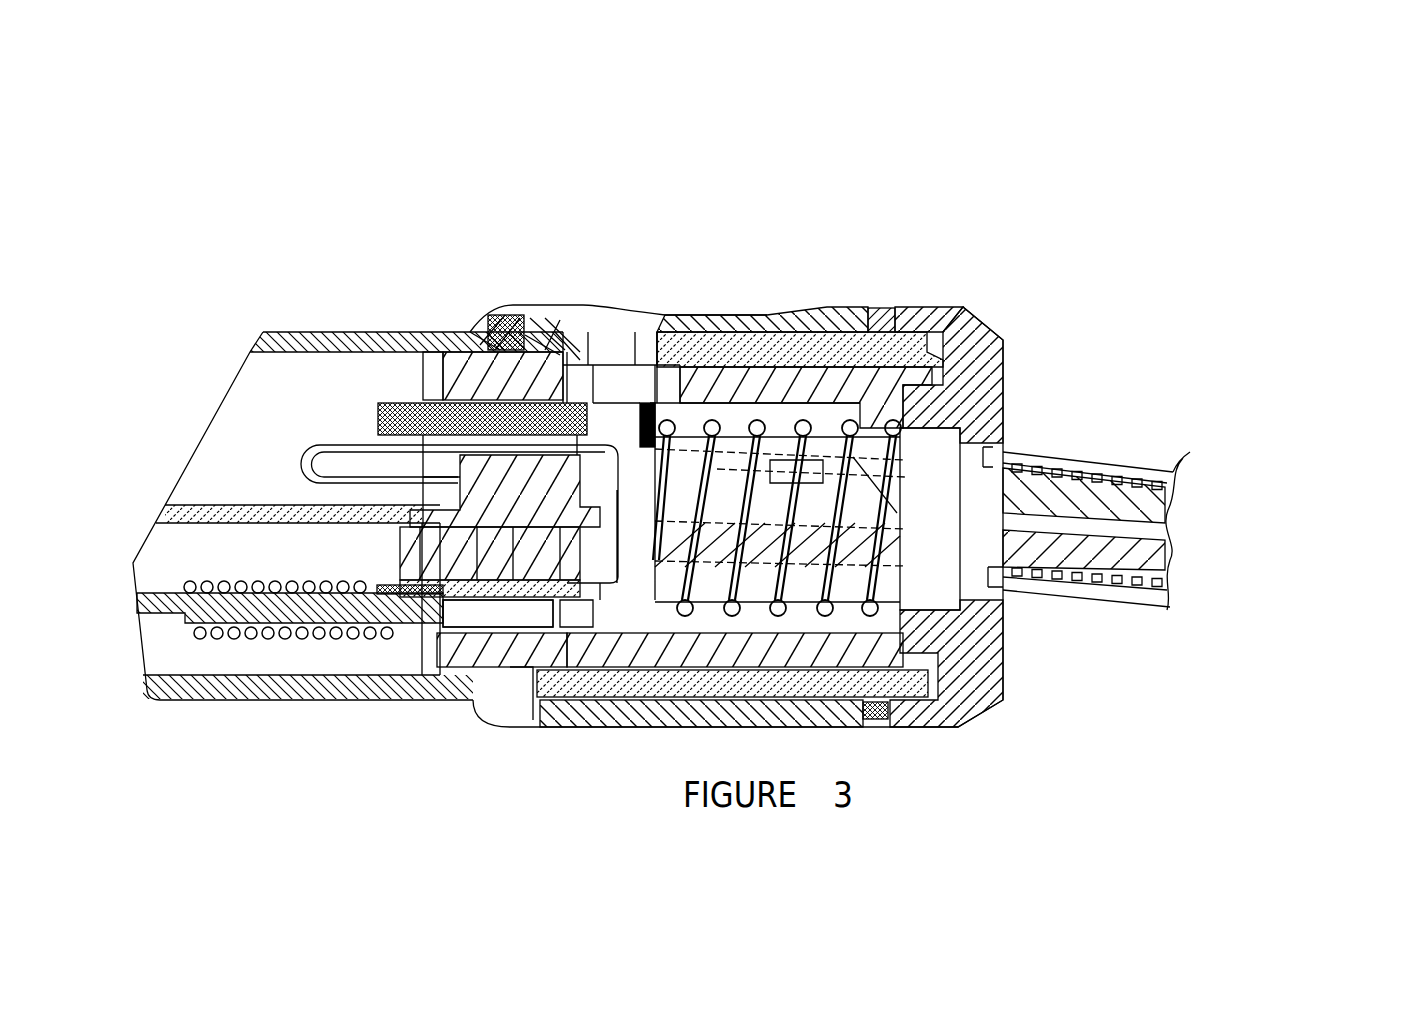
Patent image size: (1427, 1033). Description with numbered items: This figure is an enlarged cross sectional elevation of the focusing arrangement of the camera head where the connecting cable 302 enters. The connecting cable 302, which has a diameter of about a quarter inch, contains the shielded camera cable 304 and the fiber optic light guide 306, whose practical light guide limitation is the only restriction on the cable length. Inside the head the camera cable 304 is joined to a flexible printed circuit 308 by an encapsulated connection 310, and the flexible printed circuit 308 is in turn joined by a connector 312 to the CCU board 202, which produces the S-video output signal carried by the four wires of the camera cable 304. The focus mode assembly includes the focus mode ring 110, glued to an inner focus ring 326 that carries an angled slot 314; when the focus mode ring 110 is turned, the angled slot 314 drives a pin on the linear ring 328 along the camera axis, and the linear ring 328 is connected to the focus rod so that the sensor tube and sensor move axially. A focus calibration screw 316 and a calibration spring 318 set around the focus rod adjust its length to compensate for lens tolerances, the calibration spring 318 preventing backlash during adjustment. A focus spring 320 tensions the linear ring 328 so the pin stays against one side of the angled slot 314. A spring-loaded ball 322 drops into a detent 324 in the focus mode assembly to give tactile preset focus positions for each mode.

The focus mode ring 110 is at (776, 311).
The CCU board 202 is at (227, 505).
The connecting cable 302 is at (1133, 463).
The camera cable 304 is at (1072, 500).
The fiber optic light guide 306 is at (1047, 548).
The flexible printed circuit 308 is at (328, 441).
The encapsulated connection 310 is at (845, 503).
The connector 312 is at (512, 478).
The angled slot 314 is at (612, 348).
The focus calibration screw 316 is at (511, 610).
The calibration spring 318 is at (575, 335).
The focus spring 320 is at (1010, 343).
The spring-loaded ball 322 is at (510, 335).
The detent 324 is at (555, 330).
The inner focus ring 326 is at (696, 318).
The linear ring 328 is at (408, 403).